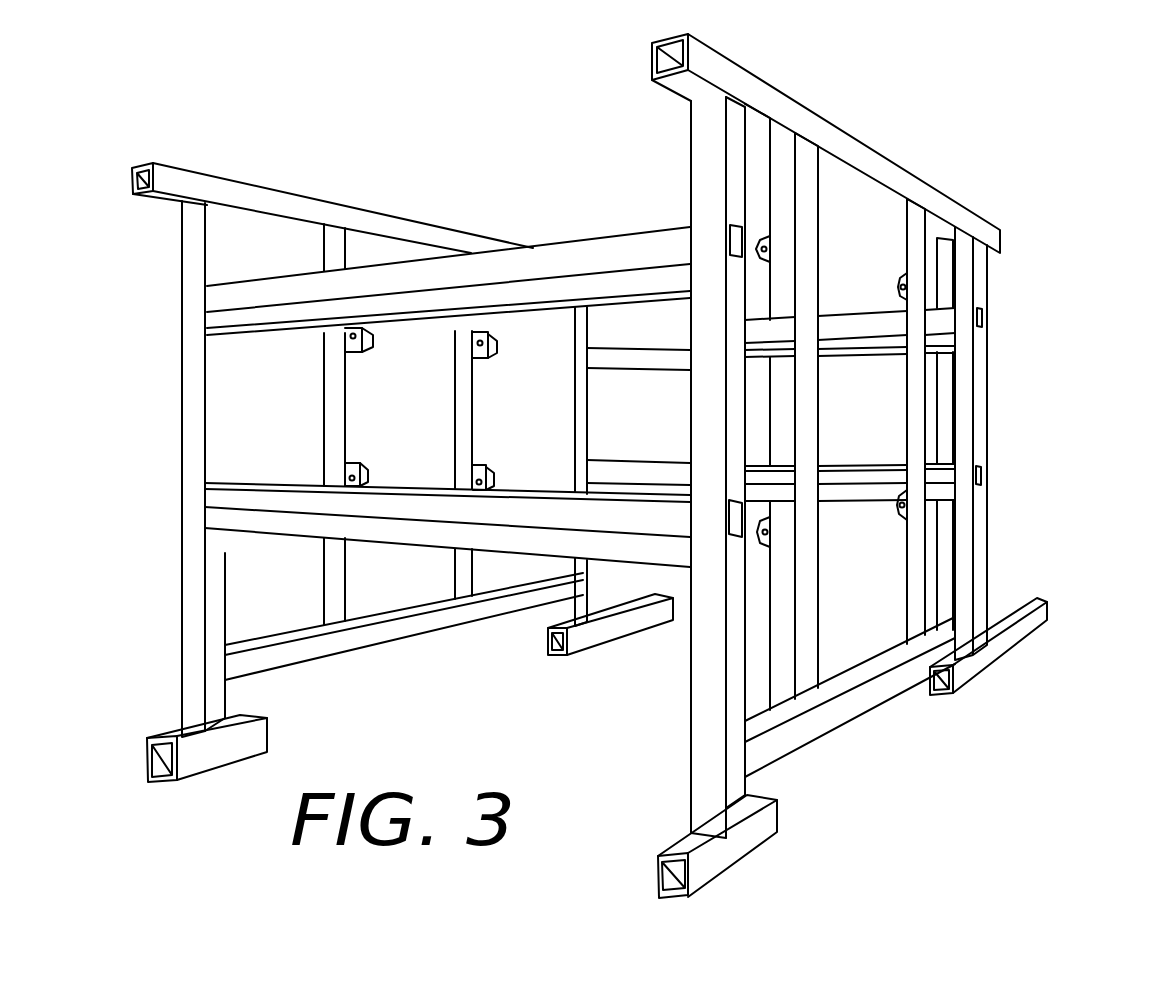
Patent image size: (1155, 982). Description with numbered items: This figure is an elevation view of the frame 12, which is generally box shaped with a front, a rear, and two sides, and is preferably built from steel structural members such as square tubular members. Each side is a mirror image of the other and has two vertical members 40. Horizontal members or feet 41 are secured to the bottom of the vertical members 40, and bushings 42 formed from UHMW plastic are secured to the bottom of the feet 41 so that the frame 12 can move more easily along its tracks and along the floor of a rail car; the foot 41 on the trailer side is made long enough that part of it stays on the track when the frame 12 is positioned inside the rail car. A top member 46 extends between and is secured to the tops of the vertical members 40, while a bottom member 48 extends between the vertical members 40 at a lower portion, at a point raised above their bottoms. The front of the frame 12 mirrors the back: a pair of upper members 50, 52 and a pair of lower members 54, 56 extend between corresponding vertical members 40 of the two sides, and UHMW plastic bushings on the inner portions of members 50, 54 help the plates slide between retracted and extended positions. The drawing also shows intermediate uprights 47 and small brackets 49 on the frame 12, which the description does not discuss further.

The frame 12 is at (500, 137).
The vertical member 40 is at (182, 440).
The foot 41 is at (262, 733).
The bushing 42 is at (200, 770).
The top member 46 is at (280, 193).
The stud 47 is at (350, 425).
The bottom member 48 is at (377, 633).
The bracket 49 is at (373, 341).
The upper member 50 is at (574, 247).
The upper member 52 is at (298, 336).
The lower member 54 is at (263, 488).
The lower member 56 is at (282, 524).